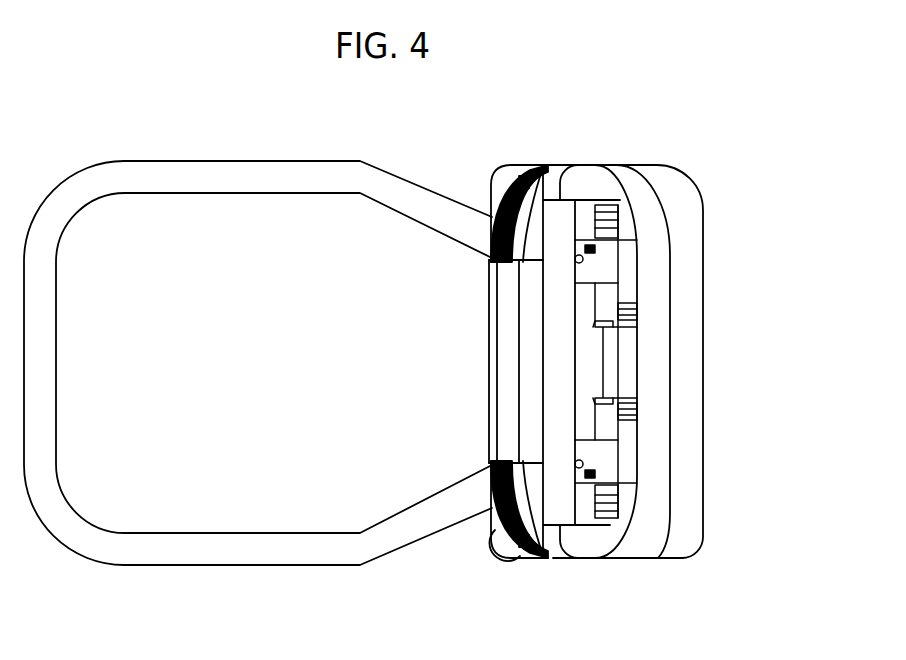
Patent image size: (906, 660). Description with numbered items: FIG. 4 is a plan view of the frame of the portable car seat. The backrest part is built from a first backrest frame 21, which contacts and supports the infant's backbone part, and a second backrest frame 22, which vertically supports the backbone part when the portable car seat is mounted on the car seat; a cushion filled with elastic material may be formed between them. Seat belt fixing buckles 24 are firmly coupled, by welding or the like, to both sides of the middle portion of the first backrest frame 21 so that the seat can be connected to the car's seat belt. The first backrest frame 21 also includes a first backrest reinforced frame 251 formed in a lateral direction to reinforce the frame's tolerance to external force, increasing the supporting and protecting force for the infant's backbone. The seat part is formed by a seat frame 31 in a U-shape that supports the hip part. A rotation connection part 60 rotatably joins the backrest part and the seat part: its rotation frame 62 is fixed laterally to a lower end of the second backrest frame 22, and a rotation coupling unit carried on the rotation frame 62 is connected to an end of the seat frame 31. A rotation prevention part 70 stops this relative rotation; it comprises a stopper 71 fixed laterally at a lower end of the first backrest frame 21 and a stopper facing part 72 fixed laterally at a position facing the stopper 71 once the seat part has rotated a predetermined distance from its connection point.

The first backrest frame 21 is at (588, 172).
The second backrest frame 22 is at (673, 176).
The seat belt fixing buckle 24 is at (530, 165).
The seat frame 31 is at (178, 160).
The rotation connection part 60 is at (686, 361).
The rotation frame 62 is at (616, 353).
The rotation prevention part 70 is at (465, 361).
The stopper 71 is at (427, 297).
The stopper facing part 72 is at (492, 309).
The first backrest reinforced frame 251 is at (566, 547).